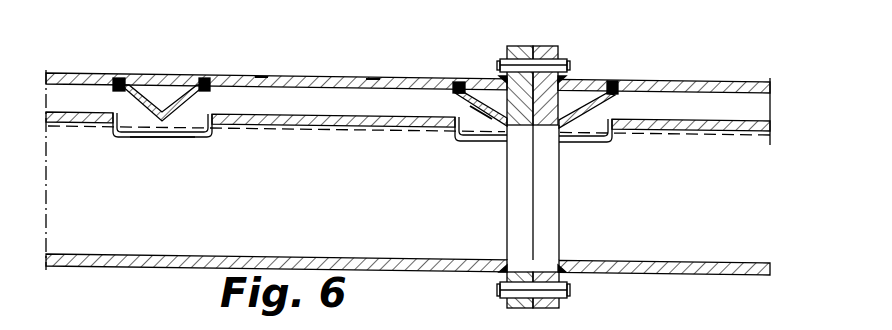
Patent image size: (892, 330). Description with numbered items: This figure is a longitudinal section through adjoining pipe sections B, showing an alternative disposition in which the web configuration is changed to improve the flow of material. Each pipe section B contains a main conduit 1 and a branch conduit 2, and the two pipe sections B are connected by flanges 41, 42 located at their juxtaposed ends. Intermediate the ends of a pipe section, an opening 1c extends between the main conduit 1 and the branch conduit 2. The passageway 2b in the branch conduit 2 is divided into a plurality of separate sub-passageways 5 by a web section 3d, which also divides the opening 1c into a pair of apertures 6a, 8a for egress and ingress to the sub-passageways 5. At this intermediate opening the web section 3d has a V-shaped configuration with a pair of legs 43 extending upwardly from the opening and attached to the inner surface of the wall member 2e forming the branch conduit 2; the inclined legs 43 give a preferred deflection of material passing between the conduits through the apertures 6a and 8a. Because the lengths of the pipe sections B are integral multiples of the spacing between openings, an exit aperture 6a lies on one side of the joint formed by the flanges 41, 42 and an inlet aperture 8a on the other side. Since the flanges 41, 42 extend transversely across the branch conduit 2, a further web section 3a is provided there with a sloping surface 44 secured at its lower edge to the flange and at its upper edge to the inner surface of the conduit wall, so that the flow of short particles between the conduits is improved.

The main conduit 1 is at (292, 110).
The opening 1c is at (172, 133).
The branch conduit 2 is at (262, 78).
The passageway 2b is at (372, 98).
The wall member 2e is at (118, 80).
The inclined bracket strip 3a is at (492, 98).
The web section 3d is at (162, 97).
The sub-passageways 5 is at (78, 102).
The aperture 6a is at (147, 115).
The aperture 8a is at (193, 115).
The flange 41 is at (520, 46).
The flange 42 is at (553, 59).
The legs 43 is at (203, 80).
The sloping surface 44 is at (487, 130).
The pipe sections B is at (438, 277).